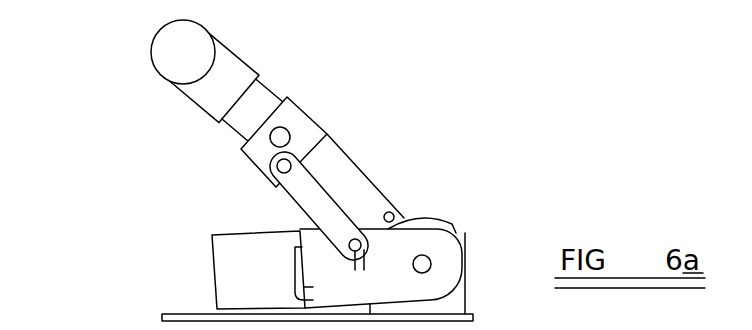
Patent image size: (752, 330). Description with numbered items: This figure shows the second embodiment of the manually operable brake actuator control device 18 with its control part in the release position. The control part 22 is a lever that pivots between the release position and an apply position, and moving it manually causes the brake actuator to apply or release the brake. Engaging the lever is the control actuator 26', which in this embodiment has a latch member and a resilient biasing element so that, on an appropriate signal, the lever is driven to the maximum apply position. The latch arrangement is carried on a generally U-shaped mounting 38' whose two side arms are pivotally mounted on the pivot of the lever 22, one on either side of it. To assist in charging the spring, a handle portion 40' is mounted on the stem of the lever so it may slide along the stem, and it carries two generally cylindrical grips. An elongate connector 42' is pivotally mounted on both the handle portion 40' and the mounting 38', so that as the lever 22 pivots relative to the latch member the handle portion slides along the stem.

The brake actuator control device 18 is at (457, 130).
The control part 22 is at (289, 82).
The control actuator 26' is at (171, 270).
The mounting 38' is at (434, 224).
The handle portion 40' is at (332, 115).
The elongate connector 42' is at (244, 211).